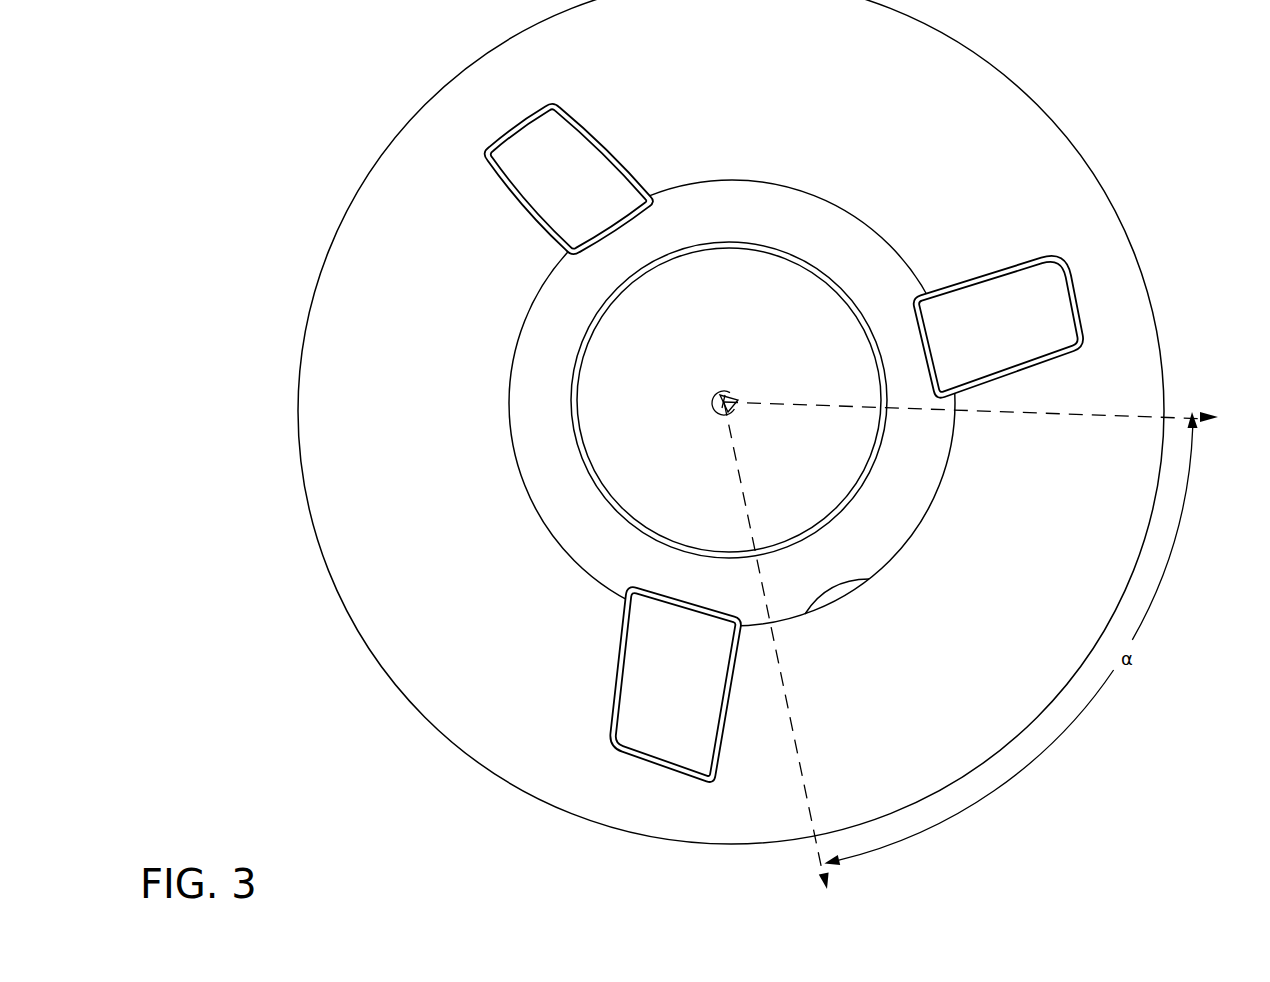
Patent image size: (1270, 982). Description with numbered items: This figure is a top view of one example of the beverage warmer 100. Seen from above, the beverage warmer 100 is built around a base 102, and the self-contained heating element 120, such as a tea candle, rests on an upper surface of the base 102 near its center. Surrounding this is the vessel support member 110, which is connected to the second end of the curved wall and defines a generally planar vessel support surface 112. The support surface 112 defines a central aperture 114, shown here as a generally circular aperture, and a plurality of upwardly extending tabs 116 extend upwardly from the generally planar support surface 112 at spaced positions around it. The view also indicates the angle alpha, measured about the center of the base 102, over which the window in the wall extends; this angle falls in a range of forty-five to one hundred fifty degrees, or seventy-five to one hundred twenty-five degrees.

The beverage warmer 100 is at (262, 148).
The base 102 is at (578, 503).
The vessel support member 110 is at (1090, 167).
The vessel support surface 112 is at (970, 218).
The central aperture 114 is at (810, 612).
The upwardly extending tabs 116 is at (577, 189).
The self-contained heating element 120 is at (783, 252).